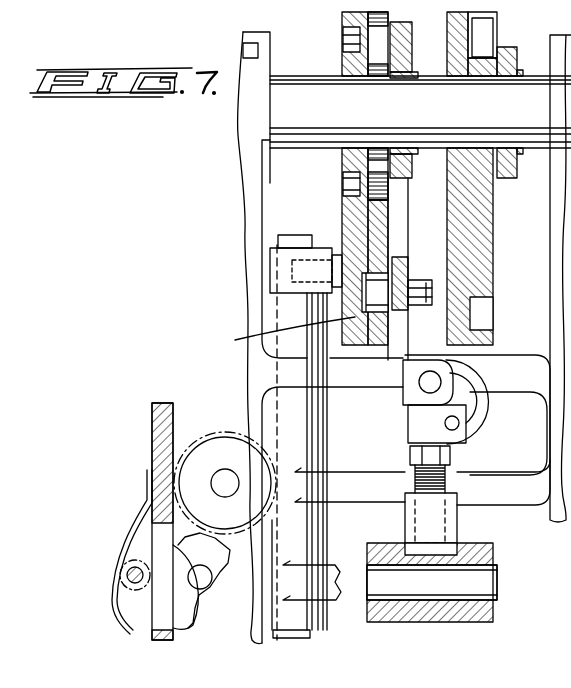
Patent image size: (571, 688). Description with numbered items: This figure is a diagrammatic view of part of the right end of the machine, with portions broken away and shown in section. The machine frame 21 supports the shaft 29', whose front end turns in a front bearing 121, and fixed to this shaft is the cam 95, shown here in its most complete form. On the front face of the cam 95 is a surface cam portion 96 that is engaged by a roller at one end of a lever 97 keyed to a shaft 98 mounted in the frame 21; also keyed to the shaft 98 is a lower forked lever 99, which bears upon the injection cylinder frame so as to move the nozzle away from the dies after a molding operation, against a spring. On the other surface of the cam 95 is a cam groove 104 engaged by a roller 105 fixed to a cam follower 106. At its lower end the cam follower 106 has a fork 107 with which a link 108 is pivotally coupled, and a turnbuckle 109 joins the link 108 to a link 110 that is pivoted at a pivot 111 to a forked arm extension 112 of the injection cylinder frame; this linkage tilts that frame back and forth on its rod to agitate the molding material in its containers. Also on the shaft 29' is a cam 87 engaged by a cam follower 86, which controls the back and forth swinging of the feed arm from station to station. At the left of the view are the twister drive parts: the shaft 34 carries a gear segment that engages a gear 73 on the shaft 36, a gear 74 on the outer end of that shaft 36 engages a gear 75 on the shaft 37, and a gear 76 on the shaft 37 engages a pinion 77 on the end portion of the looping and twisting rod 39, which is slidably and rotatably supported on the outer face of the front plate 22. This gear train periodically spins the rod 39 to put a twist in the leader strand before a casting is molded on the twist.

The front bearing 121 is at (247, 112).
The frame 21 is at (258, 311).
The shaft 29' is at (420, 93).
The surface cam portion 96 is at (348, 233).
The cam follower 106 is at (407, 55).
The cam groove 104 is at (395, 265).
The roller 105 is at (400, 313).
The cam 87 is at (494, 327).
The cam follower 86 is at (513, 47).
The lever 97 is at (270, 266).
The shaft 98 is at (278, 238).
The cam 95 is at (278, 332).
The forked lever 99 is at (330, 545).
The fork 107 is at (412, 385).
The shaft 34 is at (462, 390).
The link 108 is at (455, 410).
The turnbuckle 109 is at (450, 452).
The link 110 is at (457, 500).
The forked arm extension 112 is at (494, 550).
The pivot 111 is at (478, 582).
The front plate 22 is at (150, 412).
The gear 74 is at (196, 440).
The gear 73 is at (187, 450).
The shaft 36 is at (230, 470).
The gear 75 is at (165, 547).
The pinion 77 is at (121, 568).
The looping and twisting rod 39 is at (128, 576).
The gear 76 is at (150, 600).
The shaft 37 is at (203, 580).